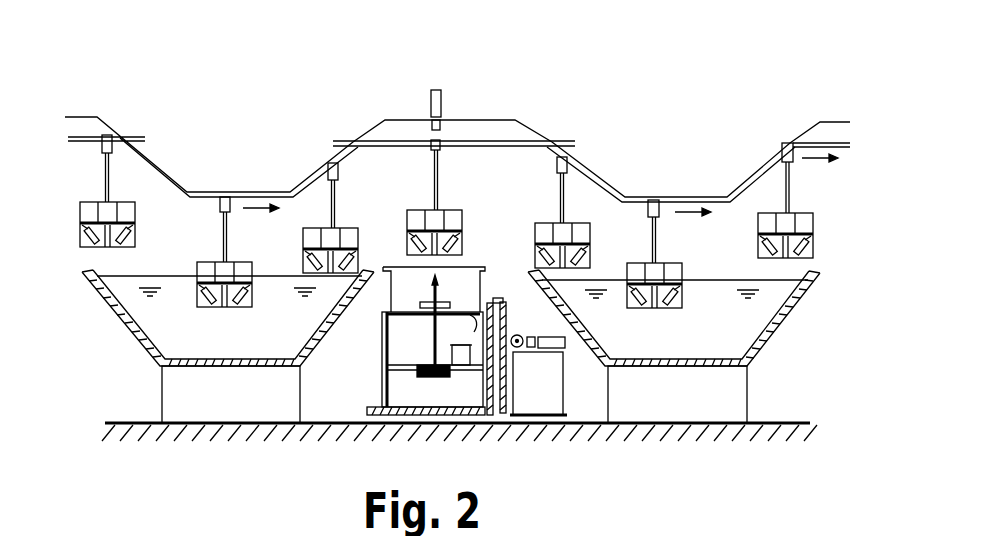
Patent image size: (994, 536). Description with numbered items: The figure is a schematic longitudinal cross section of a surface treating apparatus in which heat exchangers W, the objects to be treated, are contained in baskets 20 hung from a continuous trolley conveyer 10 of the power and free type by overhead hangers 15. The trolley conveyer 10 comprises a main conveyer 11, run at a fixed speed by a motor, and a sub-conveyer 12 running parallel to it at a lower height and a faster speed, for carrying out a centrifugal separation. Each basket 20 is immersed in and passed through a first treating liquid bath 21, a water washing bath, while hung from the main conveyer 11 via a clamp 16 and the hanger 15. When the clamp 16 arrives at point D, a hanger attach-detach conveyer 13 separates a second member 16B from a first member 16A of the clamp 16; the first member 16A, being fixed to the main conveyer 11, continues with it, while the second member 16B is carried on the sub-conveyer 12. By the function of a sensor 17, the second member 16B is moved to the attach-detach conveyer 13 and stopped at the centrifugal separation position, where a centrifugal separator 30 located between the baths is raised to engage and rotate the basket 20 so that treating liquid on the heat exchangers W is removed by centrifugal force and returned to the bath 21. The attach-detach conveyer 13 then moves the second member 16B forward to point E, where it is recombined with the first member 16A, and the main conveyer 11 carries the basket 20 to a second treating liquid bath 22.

The continuous trolley conveyer 10 is at (260, 122).
The main conveyer 11 is at (513, 120).
The sub-conveyer 12 is at (463, 125).
The hanger attach-detach conveyer 13 is at (578, 145).
The hanger 15 is at (440, 153).
The clamp 16 is at (218, 202).
The first member 16A is at (430, 122).
The second member 16B is at (430, 145).
The sensor 17 is at (435, 90).
The basket 20 is at (80, 218).
The treating liquid bath 21 is at (132, 335).
The second treating liquid bath 22 is at (788, 322).
The centrifugal separator 30 is at (375, 333).
The point D is at (342, 124).
The point E is at (556, 115).
The heat exchangers W is at (85, 247).